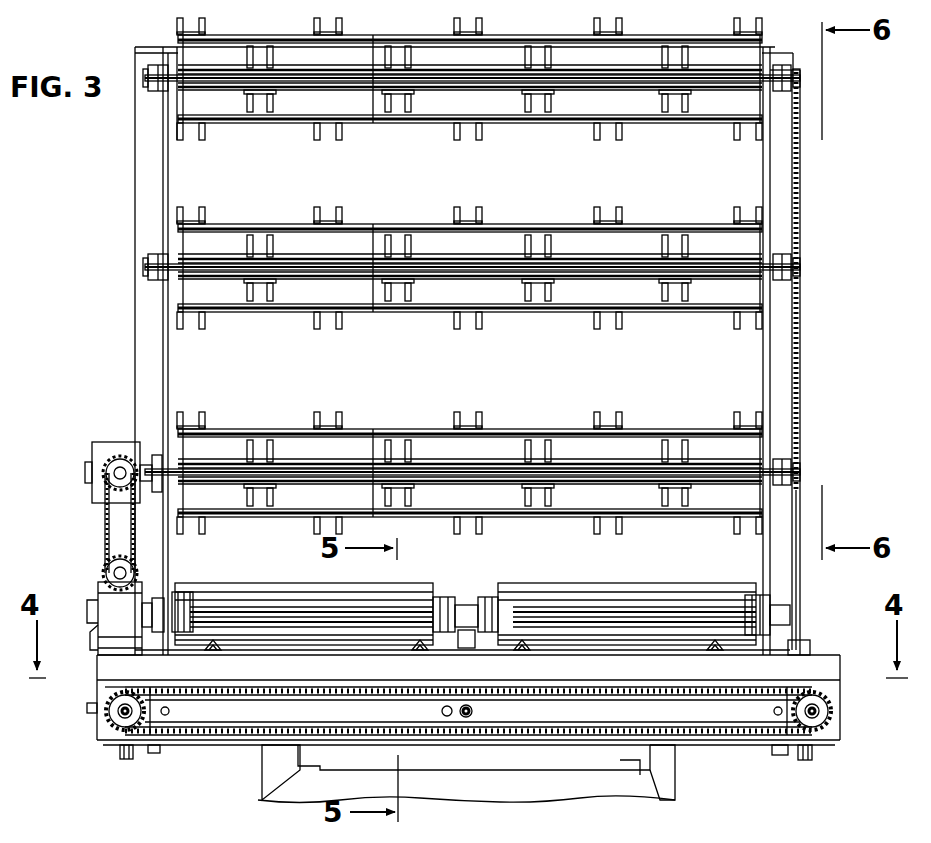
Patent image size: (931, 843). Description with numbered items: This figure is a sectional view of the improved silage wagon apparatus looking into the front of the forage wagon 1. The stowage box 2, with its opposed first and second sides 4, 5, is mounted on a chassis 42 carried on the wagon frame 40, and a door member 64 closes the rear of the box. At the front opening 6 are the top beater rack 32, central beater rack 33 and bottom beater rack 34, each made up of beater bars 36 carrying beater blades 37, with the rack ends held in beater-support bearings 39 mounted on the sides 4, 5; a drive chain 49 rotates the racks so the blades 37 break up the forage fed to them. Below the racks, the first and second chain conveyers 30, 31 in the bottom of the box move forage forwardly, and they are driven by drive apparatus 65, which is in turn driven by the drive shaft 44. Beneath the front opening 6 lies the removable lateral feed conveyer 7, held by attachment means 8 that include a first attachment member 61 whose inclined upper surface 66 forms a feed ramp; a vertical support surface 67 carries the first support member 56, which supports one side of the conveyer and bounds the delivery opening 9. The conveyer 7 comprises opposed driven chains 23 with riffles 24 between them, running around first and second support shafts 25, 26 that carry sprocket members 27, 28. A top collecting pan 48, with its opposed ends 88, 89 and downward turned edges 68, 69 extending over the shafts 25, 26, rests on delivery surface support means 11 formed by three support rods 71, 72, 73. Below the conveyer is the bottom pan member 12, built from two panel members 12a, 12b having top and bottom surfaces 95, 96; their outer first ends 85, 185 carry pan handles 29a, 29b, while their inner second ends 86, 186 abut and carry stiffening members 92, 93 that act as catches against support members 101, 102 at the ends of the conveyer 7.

The forage wagon 1 is at (95, 156).
The stowage box 2 is at (161, 181).
The first side 4 is at (771, 190).
The second side 5 is at (160, 190).
The front opening 6 is at (754, 174).
The lateral feed conveyer 7 is at (836, 672).
The attachment means 8 is at (95, 683).
The delivery opening 9 is at (168, 748).
The delivery surface support means 11 is at (441, 712).
The bottom pan member 12 is at (558, 744).
The elongated panel member 12a is at (557, 737).
The elongated panel member 12b is at (384, 737).
The driven chains 23 is at (312, 690).
The riffles 24 is at (272, 688).
The first support shaft 25 is at (118, 713).
The second support shaft 26 is at (842, 718).
The sprocket members 27 is at (150, 753).
The sprocket members 28 is at (828, 722).
The pan handle 29a is at (803, 762).
The pan handle 29b is at (128, 761).
The first chain conveyer 30 is at (258, 581).
The second chain conveyer 31 is at (581, 584).
The top beater rack 32 is at (533, 38).
The central beater rack 33 is at (532, 225).
The bottom beater rack 34 is at (533, 430).
The beater bars 36 is at (364, 40).
The beater blades 37 is at (253, 56).
The beater-support bearings 39 is at (148, 86).
The wagon frame 40 is at (263, 774).
The chassis 42 is at (670, 756).
The drive shaft 44 is at (473, 712).
The top collecting pan 48 is at (632, 698).
The drive chain 49 is at (801, 216).
The first support member 56 is at (389, 707).
The first attachment member 61 is at (103, 667).
The door member 64 is at (504, 388).
The drive apparatus 65 is at (90, 523).
The inclined upper surface 66 is at (812, 672).
The vertical support surface 67 is at (828, 685).
The downward turned edge 68 is at (84, 708).
The downward turned edge 69 is at (824, 697).
The support rod 71 is at (170, 711).
The support rod 72 is at (446, 705).
The support rod 73 is at (774, 711).
The first end 85 is at (822, 750).
The second end 86 is at (476, 738).
The end of collecting pan 88 is at (136, 695).
The end of collecting pan 89 is at (802, 690).
The stiffening member 92 is at (477, 743).
The stiffening member 93 is at (112, 705).
The top surface 95 is at (340, 735).
The bottom surface 96 is at (340, 735).
The support member 101 is at (785, 755).
The support member 102 is at (165, 772).
The first end 185 is at (105, 748).
The second end 186 is at (463, 738).